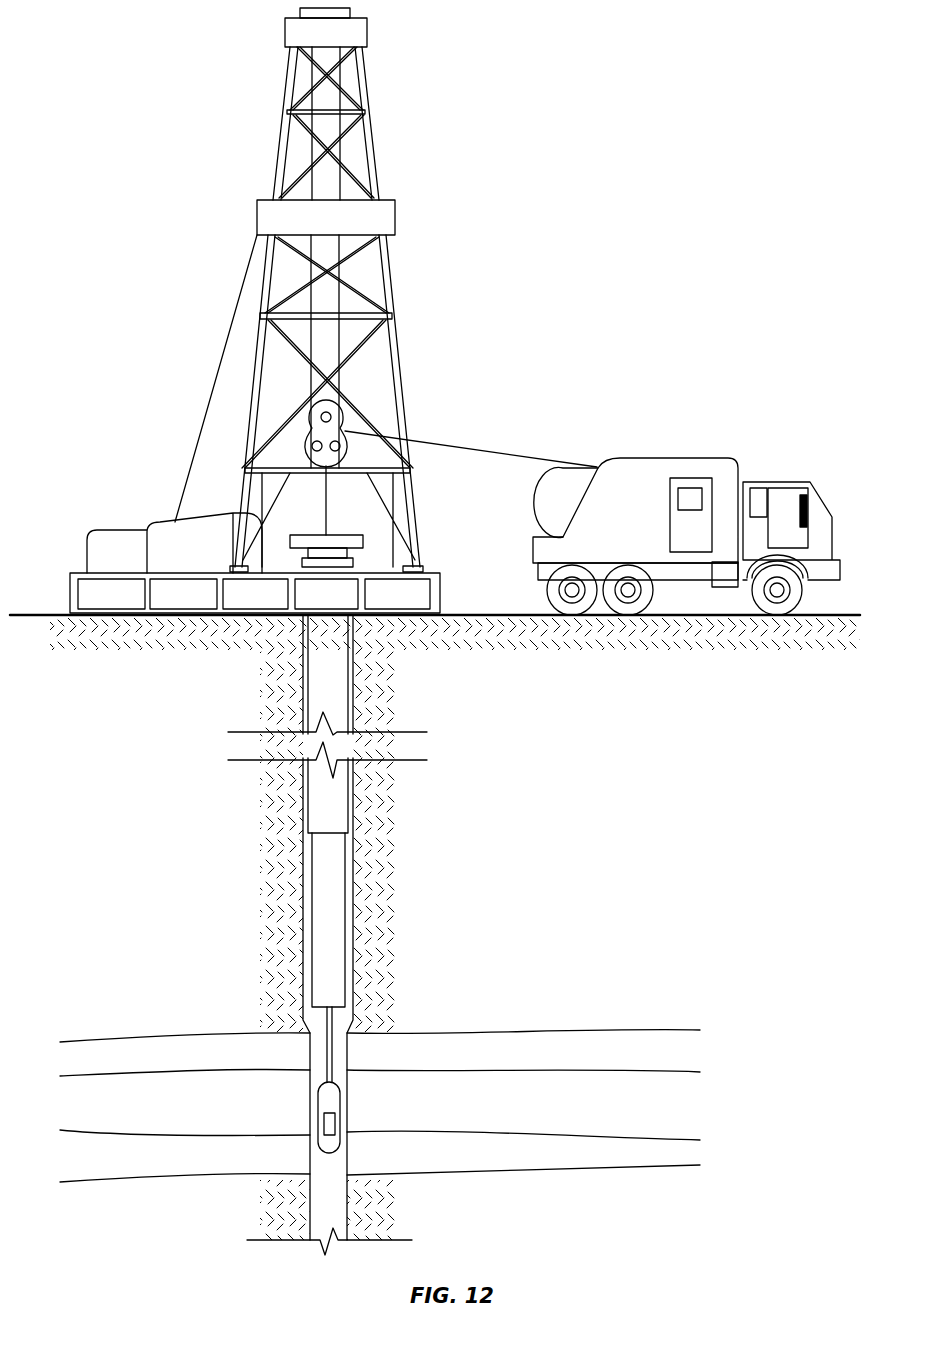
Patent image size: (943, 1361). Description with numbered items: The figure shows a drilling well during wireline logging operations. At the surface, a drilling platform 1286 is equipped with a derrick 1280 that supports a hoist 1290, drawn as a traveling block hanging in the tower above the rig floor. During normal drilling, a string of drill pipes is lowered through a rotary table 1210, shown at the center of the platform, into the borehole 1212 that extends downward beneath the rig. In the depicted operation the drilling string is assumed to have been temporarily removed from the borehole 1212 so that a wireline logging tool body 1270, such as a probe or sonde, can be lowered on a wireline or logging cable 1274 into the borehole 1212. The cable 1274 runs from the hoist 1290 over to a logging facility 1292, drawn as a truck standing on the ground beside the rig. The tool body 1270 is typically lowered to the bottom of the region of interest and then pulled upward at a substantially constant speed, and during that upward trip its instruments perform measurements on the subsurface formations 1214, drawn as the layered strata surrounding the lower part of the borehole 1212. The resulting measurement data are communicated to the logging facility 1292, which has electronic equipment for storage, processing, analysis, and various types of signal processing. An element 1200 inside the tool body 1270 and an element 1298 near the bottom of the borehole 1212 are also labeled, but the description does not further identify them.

The sensor module 1200 is at (330, 1128).
The rotary table 1210 is at (365, 541).
The borehole 1212 is at (310, 1057).
The subsurface formations 1214 is at (700, 1018).
The wireline logging tool body 1270 is at (328, 1100).
The logging cable 1274 is at (463, 444).
The derrick 1280 is at (422, 544).
The drilling platform 1286 is at (443, 596).
The hoist 1290 is at (305, 423).
The logging facility 1292 is at (667, 457).
The bottom of wellbore 1298 is at (346, 1222).